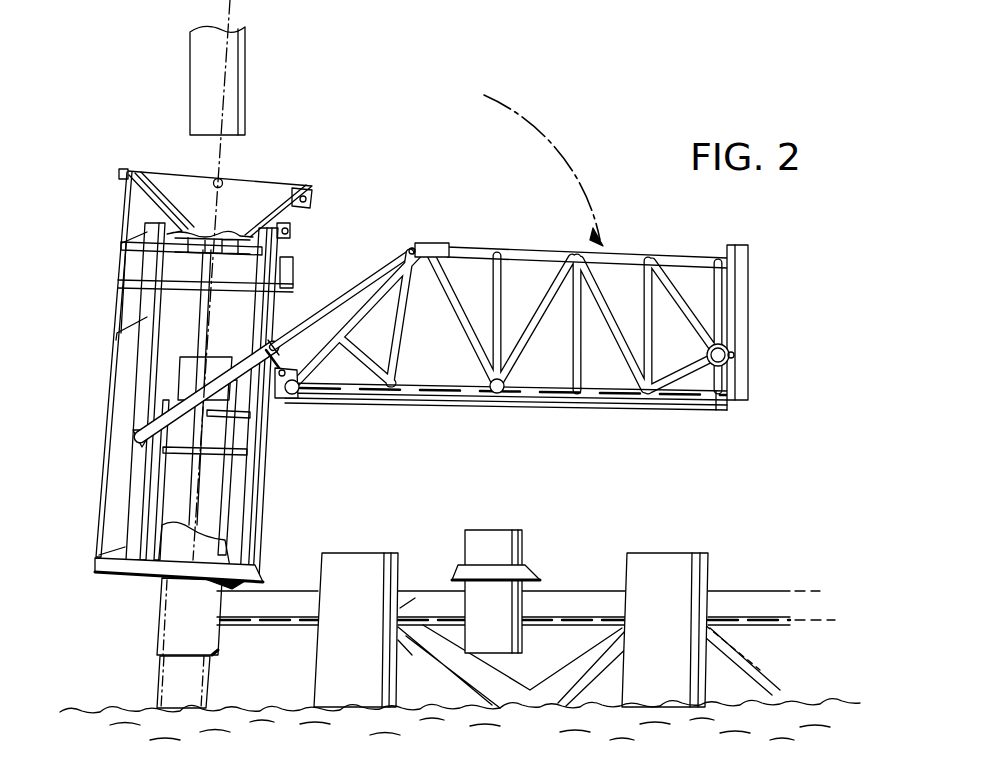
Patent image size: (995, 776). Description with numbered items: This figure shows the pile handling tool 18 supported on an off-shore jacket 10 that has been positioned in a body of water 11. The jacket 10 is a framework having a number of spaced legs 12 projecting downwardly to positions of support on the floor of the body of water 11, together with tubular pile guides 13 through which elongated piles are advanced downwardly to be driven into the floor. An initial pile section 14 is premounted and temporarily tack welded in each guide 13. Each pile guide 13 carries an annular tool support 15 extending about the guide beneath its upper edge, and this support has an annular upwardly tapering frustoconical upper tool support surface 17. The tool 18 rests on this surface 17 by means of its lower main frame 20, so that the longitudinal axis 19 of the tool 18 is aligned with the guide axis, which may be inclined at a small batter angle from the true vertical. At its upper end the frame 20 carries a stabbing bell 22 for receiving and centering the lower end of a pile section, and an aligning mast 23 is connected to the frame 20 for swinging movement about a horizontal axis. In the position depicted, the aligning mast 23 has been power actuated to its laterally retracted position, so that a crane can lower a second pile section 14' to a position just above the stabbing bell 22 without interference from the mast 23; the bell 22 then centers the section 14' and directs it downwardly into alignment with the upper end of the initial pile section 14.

The jacket 10 is at (684, 486).
The body of water 11 is at (786, 708).
The legs 12 is at (656, 566).
The tubular pile guides 13 is at (503, 637).
The initial pile section 14 is at (153, 682).
The second pile section 14' is at (245, 80).
The annular tool support 15 is at (194, 577).
The frustoconical upper tool support surface 17 is at (160, 565).
The pile handling tool 18 is at (94, 290).
The longitudinal axis 19 is at (222, 165).
The main frame 20 is at (98, 511).
The stabbing bell 22 is at (292, 205).
The aligning mast 23 is at (488, 240).